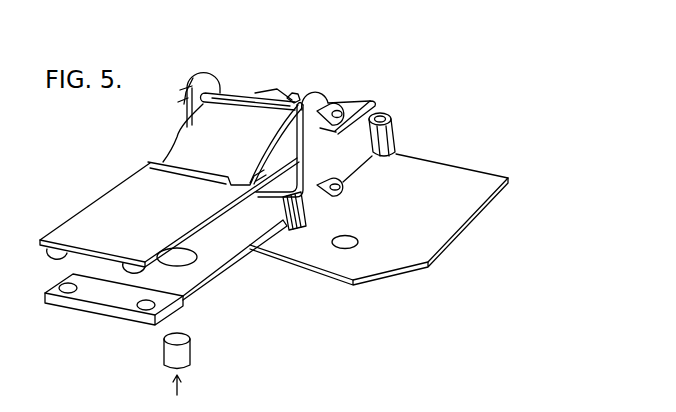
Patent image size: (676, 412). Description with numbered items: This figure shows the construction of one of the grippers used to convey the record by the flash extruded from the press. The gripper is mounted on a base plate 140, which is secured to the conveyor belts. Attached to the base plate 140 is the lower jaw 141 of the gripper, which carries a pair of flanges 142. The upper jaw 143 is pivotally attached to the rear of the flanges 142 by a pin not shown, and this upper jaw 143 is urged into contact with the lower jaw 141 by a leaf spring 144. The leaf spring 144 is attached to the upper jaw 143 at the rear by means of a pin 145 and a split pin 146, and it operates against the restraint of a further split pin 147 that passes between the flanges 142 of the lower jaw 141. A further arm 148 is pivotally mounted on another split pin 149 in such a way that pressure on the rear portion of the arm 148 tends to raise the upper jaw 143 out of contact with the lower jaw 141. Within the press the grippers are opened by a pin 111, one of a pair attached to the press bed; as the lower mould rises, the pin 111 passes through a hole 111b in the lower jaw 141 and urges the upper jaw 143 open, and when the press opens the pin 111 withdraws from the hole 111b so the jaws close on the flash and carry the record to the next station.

The base plate 140 is at (473, 173).
The lower jaw 141 is at (245, 263).
The flanges 142 is at (192, 80).
The upper jaw 143 is at (107, 205).
The leaf spring 144 is at (187, 151).
The pin 145 is at (308, 94).
The split pin 146 is at (291, 93).
The split pin 147 is at (238, 94).
The arm 148 is at (398, 128).
The split pin 149 is at (340, 197).
The pin 111 is at (191, 355).
The hole 111b is at (190, 263).